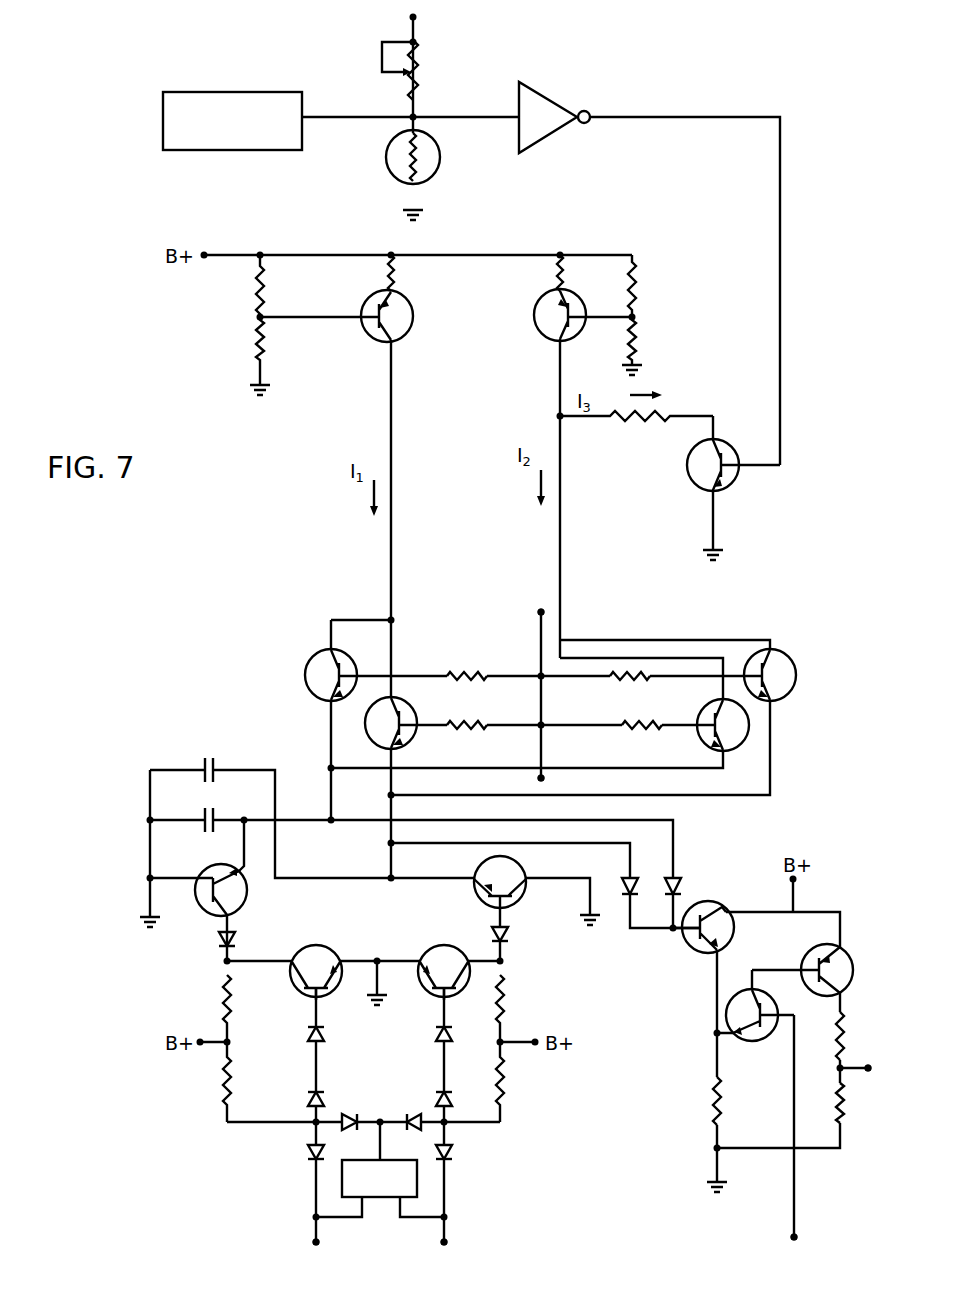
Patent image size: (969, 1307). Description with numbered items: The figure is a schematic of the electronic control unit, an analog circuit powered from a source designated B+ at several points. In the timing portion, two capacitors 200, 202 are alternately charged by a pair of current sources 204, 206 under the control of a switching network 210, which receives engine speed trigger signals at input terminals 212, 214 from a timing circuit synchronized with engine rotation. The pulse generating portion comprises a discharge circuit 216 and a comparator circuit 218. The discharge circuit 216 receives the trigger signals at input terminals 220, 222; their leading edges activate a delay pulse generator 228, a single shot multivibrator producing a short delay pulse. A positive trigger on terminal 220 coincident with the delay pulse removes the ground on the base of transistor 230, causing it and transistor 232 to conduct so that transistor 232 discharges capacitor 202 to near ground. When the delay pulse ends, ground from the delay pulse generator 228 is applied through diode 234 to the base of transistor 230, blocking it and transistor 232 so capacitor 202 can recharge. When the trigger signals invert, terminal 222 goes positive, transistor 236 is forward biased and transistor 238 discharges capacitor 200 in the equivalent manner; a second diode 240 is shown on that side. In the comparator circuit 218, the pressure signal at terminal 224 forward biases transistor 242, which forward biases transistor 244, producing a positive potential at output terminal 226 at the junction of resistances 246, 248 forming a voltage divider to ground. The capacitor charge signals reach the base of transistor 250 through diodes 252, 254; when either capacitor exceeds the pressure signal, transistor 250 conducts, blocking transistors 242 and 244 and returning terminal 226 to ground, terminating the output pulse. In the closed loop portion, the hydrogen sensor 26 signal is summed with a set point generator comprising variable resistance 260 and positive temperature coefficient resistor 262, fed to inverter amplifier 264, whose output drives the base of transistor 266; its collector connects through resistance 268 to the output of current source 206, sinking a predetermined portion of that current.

The hydrogen sensor 26 is at (247, 92).
The variable resistance 260 is at (417, 70).
The positive temperature coefficient resistor 262 is at (430, 180).
The inverter amplifier 264 is at (545, 95).
The current source 204 is at (446, 287).
The current source 206 is at (528, 287).
The resistance 268 is at (634, 420).
The transistor 266 is at (728, 488).
The switching network 210 is at (563, 712).
The input terminal 212 is at (538, 612).
The input terminal 214 is at (544, 778).
The capacitor 200 is at (216, 760).
The capacitor 202 is at (217, 813).
The transistor 232 is at (206, 912).
The transistor 230 is at (298, 950).
The transistor 236 is at (462, 948).
The transistor 238 is at (514, 864).
The diode 252 is at (624, 900).
The diode 254 is at (680, 893).
The transistor 250 is at (701, 952).
The comparator circuit 218 is at (795, 980).
The transistor 244 is at (845, 956).
The transistor 242 is at (768, 1040).
The resistance 246 is at (847, 1034).
The resistance 248 is at (850, 1108).
The output terminal 226 is at (870, 1070).
The pressure input terminal 224 is at (797, 1235).
The discharge circuit 216 is at (391, 1049).
The diode 234 is at (350, 1114).
The diode 240 is at (408, 1114).
The delay pulse generator 228 is at (417, 1185).
The input terminal 220 is at (312, 1242).
The input terminal 222 is at (448, 1242).